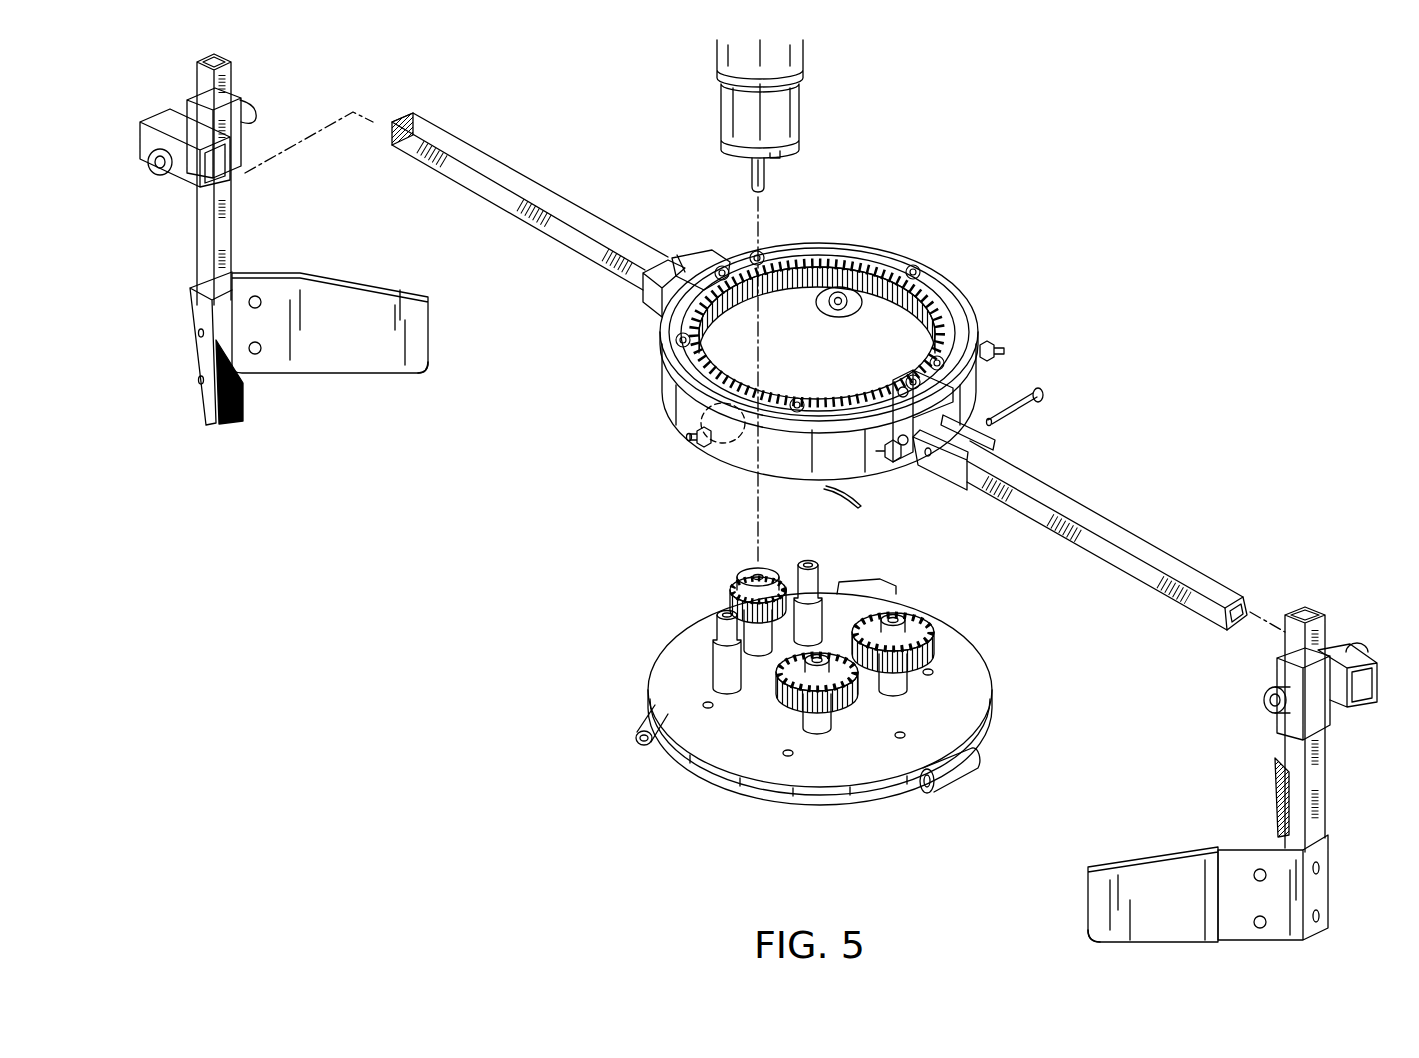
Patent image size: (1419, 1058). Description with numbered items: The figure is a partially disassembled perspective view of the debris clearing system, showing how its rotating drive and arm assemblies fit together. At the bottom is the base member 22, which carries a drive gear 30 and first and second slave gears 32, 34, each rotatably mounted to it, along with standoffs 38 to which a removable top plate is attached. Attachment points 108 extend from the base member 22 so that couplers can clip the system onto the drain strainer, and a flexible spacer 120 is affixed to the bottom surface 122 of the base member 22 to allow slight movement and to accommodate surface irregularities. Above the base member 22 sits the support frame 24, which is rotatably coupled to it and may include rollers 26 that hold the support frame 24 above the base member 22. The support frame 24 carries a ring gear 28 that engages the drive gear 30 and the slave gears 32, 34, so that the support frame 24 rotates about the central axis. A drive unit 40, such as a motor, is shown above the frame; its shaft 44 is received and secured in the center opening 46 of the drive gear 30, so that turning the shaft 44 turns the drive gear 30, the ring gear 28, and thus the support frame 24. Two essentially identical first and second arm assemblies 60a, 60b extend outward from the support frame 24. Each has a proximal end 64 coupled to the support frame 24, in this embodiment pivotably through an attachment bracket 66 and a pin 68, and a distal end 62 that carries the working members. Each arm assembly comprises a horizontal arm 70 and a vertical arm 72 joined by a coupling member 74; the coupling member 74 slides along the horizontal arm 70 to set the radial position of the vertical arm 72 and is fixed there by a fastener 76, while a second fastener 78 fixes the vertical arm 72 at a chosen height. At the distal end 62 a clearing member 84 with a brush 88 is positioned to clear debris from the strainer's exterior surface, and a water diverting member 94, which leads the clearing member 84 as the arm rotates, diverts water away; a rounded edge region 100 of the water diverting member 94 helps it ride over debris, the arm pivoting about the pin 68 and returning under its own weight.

The base member 22 is at (985, 682).
The support frame 24 is at (958, 298).
The roller 26 is at (840, 318).
The ring gear 28 is at (890, 268).
The drive gear 30 is at (733, 600).
The first slave gear 32 is at (790, 682).
The second slave gear 34 is at (925, 636).
The standoff 38 is at (715, 630).
The drive unit 40 is at (717, 104).
The shaft 44 is at (766, 178).
The center opening 46 is at (755, 572).
The first arm assembly 60a is at (540, 125).
The second arm assembly 60b is at (1220, 473).
The distal end 62 is at (622, 320).
The proximal end 64 is at (162, 443).
The attachment bracket 66 is at (676, 262).
The pin 68 is at (1043, 390).
The horizontal arm 70 is at (566, 206).
The vertical arm 72 is at (200, 243).
The coupling member 74 is at (160, 135).
The fastener 76 is at (158, 175).
The fastener 78 is at (245, 115).
The clearing member 84 is at (180, 338).
The brush 88 is at (240, 426).
The water diverting member 94 is at (333, 283).
The plate corner 100 is at (428, 378).
The attachment point 108 is at (630, 740).
The flexible spacer 120 is at (825, 802).
The bottom surface 122 is at (745, 785).